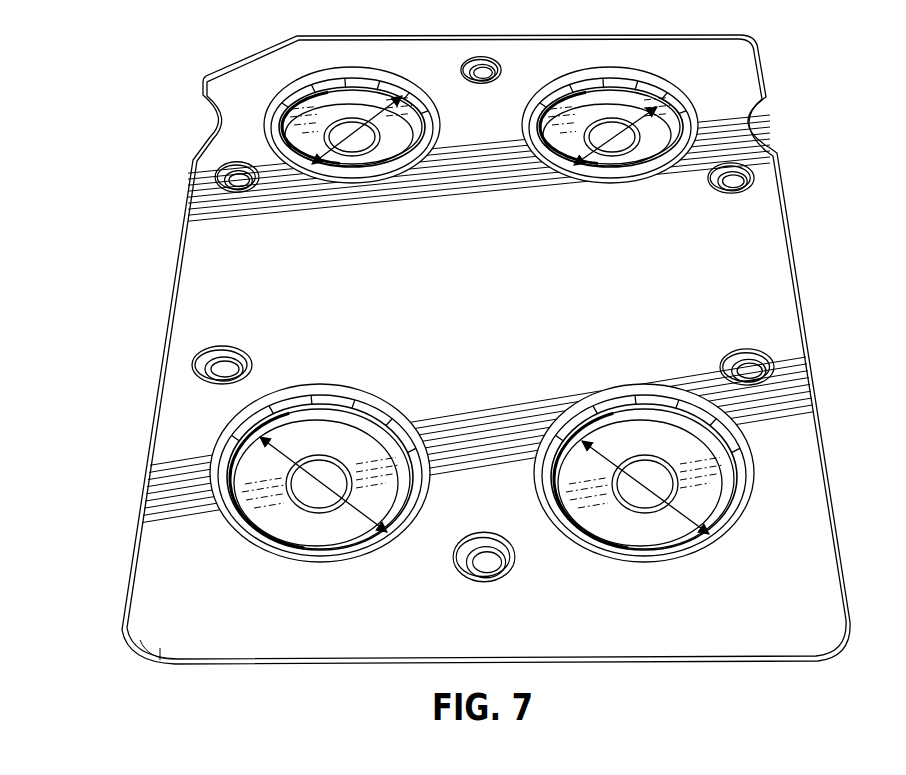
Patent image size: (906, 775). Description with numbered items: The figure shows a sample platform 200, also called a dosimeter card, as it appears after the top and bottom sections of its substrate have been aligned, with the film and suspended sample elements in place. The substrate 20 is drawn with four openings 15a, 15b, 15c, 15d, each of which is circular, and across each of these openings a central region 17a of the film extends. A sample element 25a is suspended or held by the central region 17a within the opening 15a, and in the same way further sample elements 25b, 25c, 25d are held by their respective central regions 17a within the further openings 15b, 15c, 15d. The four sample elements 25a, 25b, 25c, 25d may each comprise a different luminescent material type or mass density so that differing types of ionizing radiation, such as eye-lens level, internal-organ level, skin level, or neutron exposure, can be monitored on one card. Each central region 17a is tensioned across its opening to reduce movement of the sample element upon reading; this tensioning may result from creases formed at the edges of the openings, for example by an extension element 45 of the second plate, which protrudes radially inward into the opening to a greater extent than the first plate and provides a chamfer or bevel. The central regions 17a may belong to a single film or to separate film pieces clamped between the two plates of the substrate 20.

The sample platform 200 is at (124, 48).
The substrate 20 is at (286, 283).
The extension element 45 is at (386, 77).
The opening 15a is at (312, 160).
The further opening 15b is at (632, 130).
The further opening 15c is at (358, 518).
The further opening 15d is at (677, 520).
The central region of the film 17a is at (416, 158).
The sample element 25a is at (366, 150).
The further sample element 25b is at (624, 143).
The further sample element 25c is at (321, 464).
The further sample element 25d is at (641, 464).